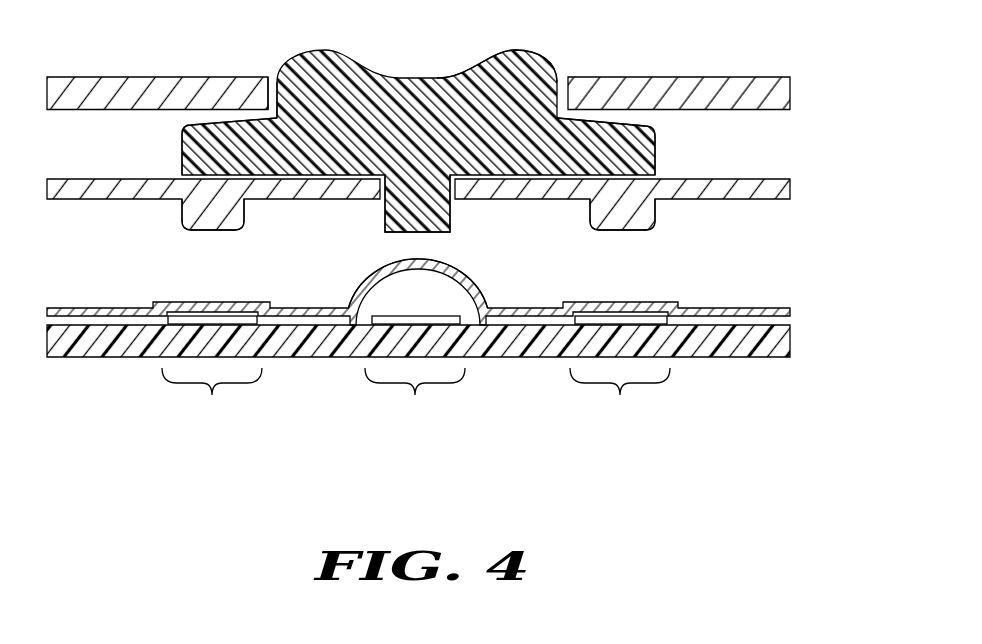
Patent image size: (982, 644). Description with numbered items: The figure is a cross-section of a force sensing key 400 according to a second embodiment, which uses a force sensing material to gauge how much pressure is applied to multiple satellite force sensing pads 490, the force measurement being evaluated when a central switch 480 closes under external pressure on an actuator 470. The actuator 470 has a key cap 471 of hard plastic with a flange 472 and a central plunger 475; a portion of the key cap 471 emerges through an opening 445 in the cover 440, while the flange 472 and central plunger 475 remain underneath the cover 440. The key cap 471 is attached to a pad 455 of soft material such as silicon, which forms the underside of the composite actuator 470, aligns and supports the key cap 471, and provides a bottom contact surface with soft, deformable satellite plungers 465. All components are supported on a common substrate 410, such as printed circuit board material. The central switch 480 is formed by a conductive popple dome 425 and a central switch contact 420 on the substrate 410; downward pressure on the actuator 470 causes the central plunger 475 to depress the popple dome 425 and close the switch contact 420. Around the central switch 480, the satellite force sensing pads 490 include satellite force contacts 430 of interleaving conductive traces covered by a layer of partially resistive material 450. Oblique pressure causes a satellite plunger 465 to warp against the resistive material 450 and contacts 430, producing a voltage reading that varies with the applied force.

The force sensing key 400 is at (704, 492).
The common substrate 410 is at (783, 347).
The central switch contact 420 is at (433, 318).
The popple dome 425 is at (366, 288).
The satellite force contacts 430 is at (198, 320).
The cover 440 is at (786, 101).
The opening 445 is at (269, 66).
The partially resistive material 450 is at (785, 315).
The pad 455 is at (786, 192).
The satellite plungers 465 is at (203, 223).
The actuator 470 is at (344, 187).
The key cap 471 is at (537, 63).
The flange 472 is at (187, 149).
The central plunger 475 is at (410, 232).
The central switch 480 is at (415, 398).
The satellite force sensing pads 490 is at (416, 398).